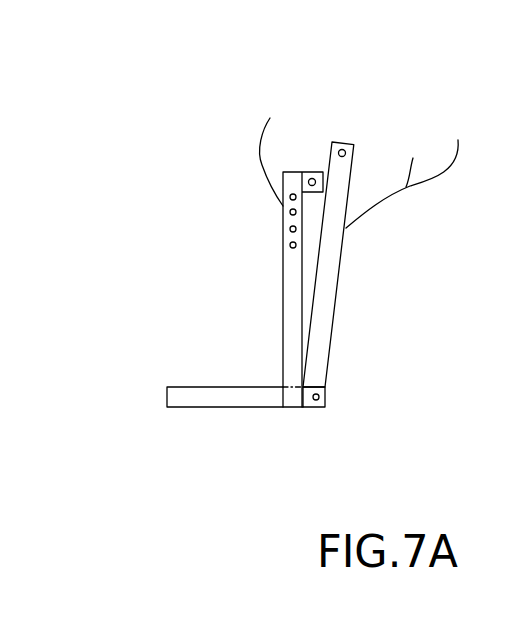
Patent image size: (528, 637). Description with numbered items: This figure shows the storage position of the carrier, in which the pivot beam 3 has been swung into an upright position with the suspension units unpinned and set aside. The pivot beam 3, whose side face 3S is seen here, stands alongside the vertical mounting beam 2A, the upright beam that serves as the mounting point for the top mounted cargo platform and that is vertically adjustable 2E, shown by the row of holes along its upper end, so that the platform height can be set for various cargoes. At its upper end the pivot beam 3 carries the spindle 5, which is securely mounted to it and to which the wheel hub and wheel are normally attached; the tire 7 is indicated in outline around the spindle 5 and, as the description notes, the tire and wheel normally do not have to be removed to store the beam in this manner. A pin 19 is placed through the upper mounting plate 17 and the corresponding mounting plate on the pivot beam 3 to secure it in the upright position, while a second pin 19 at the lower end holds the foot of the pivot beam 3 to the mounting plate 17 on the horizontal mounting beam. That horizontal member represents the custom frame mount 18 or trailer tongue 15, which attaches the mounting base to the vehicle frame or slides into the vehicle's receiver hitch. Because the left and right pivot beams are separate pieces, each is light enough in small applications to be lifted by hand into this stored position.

The vertical mounting beam 2A is at (194, 269).
The vertical adjustment 2E is at (283, 217).
The pivot beam 3 is at (377, 264).
The pivoting bar side 3S is at (340, 283).
The spindle 5 is at (342, 150).
The tire 7 is at (458, 140).
The pin 19 is at (309, 180).
The mounting plate 17 is at (305, 408).
The custom frame mount 18 is at (235, 452).
The trailer tongue 15 is at (230, 402).